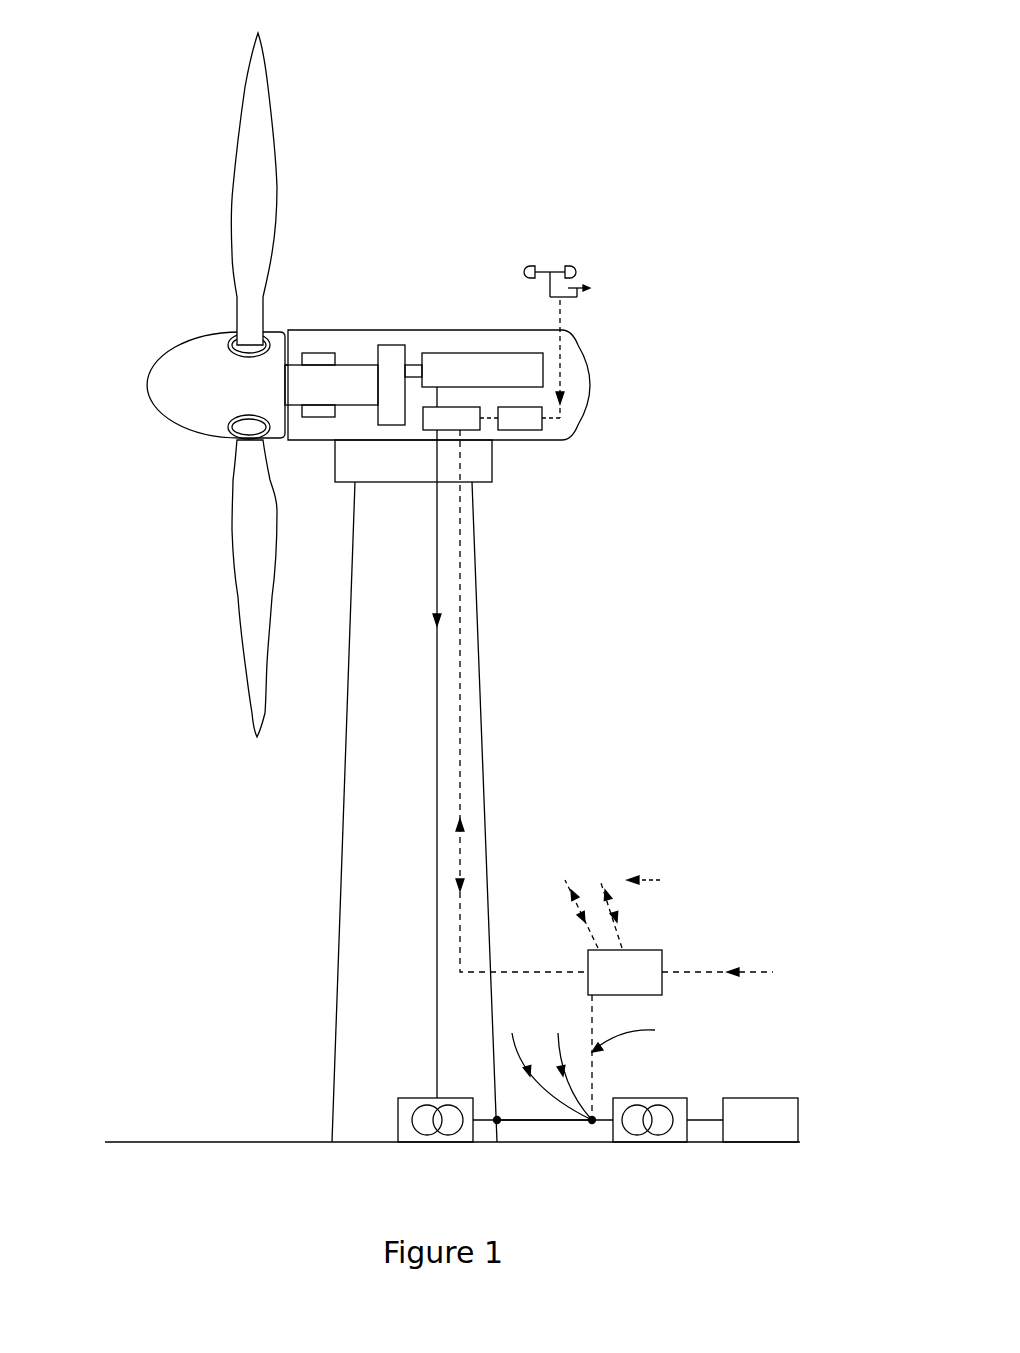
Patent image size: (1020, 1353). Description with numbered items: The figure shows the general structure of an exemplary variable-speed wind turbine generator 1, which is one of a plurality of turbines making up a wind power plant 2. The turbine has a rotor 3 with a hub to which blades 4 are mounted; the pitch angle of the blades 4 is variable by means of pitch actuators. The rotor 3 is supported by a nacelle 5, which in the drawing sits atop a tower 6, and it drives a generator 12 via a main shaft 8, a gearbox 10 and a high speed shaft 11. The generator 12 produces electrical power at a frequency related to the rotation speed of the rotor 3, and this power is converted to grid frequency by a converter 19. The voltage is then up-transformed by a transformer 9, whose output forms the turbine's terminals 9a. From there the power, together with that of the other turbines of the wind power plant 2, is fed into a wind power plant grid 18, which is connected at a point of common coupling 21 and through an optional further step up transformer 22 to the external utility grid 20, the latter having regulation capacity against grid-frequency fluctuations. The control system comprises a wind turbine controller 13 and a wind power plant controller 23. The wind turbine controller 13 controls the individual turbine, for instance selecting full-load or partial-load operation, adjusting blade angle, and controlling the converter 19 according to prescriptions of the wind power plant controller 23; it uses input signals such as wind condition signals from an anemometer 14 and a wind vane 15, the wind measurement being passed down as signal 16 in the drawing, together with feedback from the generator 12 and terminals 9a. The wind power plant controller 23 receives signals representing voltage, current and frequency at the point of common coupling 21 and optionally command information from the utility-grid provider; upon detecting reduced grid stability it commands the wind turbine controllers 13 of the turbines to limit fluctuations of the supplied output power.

The wind turbine generator 1 is at (427, 168).
The wind power plant 2 is at (145, 215).
The rotor 3 is at (147, 393).
The blades 4 is at (277, 145).
The nacelle 5 is at (318, 330).
The tower 6 is at (340, 903).
The main shaft 8 is at (350, 365).
The transformer 9 is at (412, 1100).
The terminals 9a is at (498, 1126).
The gearbox 10 is at (388, 347).
The high speed shaft 11 is at (410, 370).
The generator 12 is at (480, 353).
The wind turbine controller 13 is at (558, 438).
The anemometer 14 is at (565, 265).
The wind vane 15 is at (592, 276).
The wind measurement signal 16 is at (560, 358).
The wind power plant grid 18 is at (550, 1122).
The converter 19 is at (423, 432).
The utility grid 20 is at (775, 1143).
The point of common coupling 21 is at (595, 1124).
The step up transformer 22 is at (677, 1133).
The wind power plant controller 23 is at (650, 950).